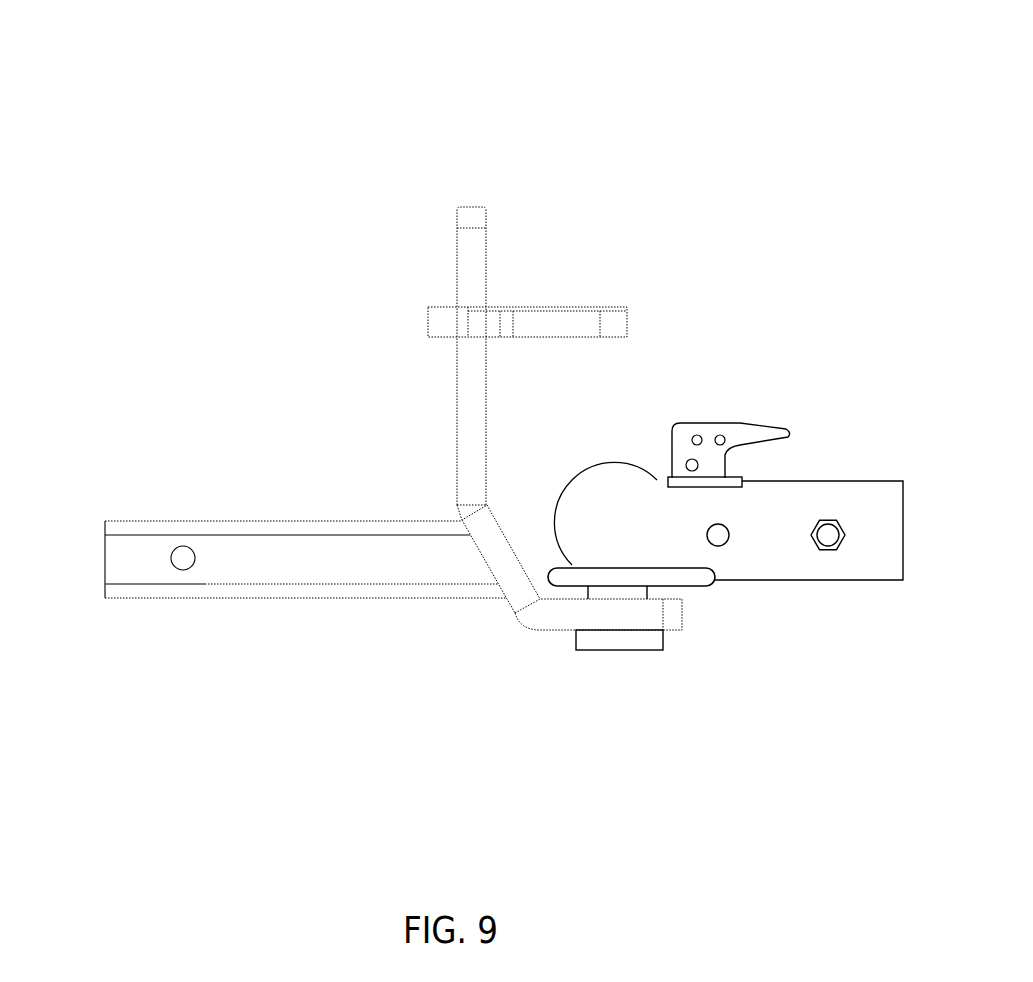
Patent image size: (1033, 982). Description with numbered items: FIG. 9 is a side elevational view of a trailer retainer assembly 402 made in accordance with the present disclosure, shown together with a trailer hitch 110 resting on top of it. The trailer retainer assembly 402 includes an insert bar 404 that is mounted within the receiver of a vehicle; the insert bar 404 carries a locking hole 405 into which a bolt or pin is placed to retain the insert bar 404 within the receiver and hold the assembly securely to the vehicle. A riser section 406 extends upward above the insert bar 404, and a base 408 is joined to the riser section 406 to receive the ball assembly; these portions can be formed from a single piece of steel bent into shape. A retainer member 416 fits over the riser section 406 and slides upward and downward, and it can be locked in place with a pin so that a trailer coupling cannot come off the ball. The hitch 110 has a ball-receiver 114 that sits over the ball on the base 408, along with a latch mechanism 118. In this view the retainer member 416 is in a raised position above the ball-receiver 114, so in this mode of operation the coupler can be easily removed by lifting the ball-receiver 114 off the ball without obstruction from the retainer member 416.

The trailer retainer assembly 402 is at (495, 105).
The insert bar 404 is at (320, 575).
The locking hole 405 is at (180, 562).
The riser section 406 is at (470, 427).
The base 408 is at (553, 615).
The retainer member 416 is at (568, 317).
The ball-receiver 114 is at (587, 507).
The hitch 110 is at (806, 467).
The latch mechanism 118 is at (718, 437).